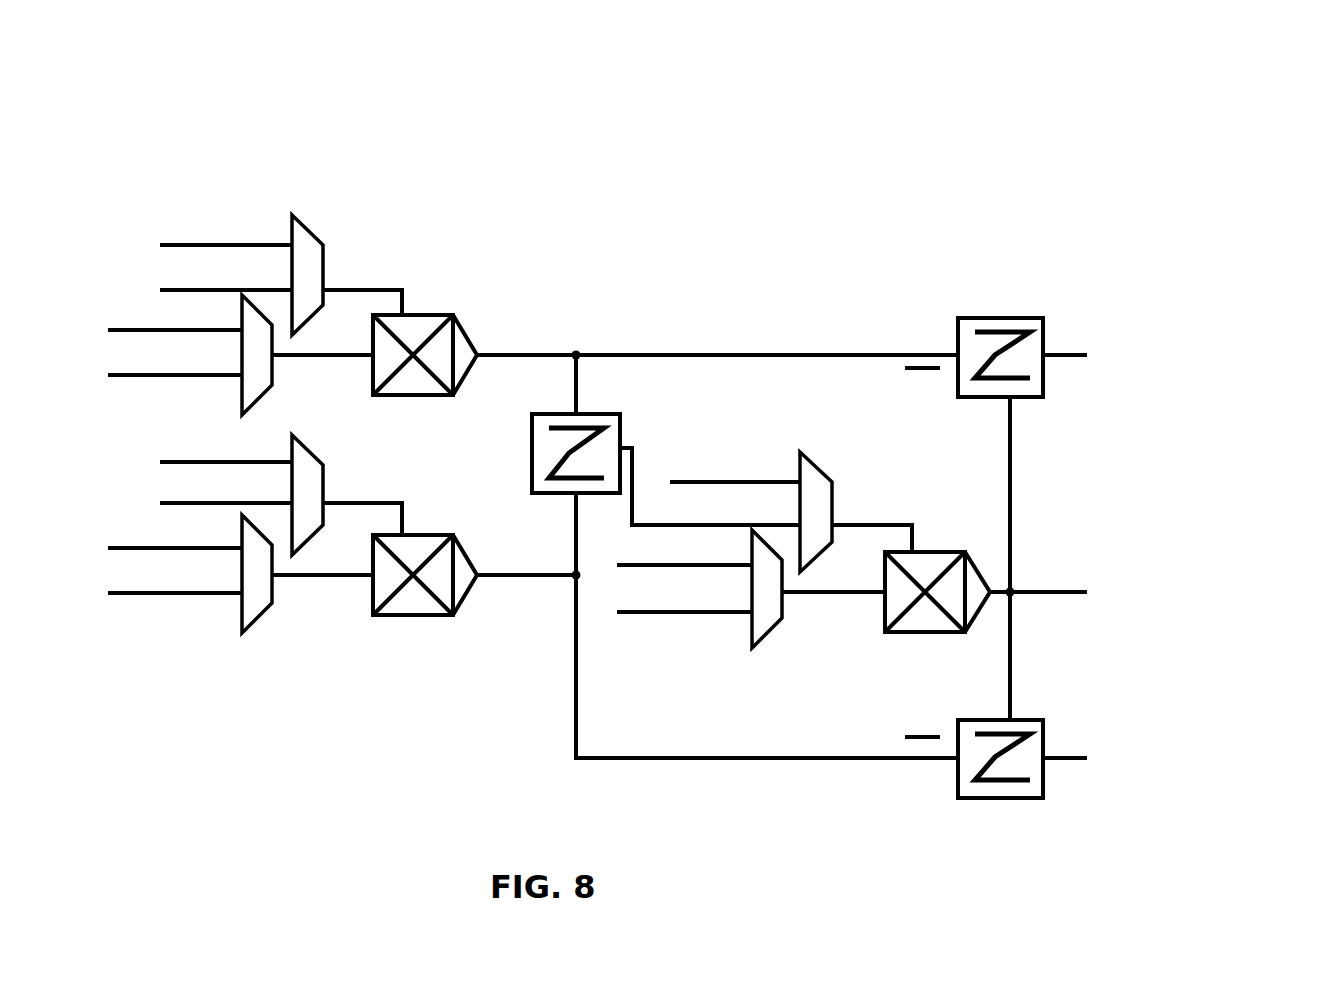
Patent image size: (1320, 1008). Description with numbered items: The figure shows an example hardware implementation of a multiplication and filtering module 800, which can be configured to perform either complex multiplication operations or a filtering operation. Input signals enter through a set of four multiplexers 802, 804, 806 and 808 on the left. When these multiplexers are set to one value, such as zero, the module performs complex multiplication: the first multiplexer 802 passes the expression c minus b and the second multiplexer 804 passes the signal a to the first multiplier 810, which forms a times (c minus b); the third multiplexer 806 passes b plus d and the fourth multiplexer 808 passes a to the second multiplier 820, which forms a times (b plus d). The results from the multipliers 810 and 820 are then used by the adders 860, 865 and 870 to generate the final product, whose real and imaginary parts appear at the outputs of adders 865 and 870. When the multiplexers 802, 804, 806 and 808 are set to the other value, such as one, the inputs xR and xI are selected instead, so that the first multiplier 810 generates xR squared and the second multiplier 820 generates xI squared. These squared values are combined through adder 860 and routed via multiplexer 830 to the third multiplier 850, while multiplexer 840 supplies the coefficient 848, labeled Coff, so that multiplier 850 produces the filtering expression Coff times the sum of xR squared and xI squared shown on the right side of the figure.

The multiplication and filtering module 800 is at (307, 135).
The first multiplexer 802 is at (328, 262).
The second multiplexer 804 is at (262, 410).
The third multiplexer 806 is at (328, 488).
The fourth multiplexer 808 is at (242, 607).
The first multiplier 810 is at (463, 330).
The second multiplier 820 is at (425, 615).
The multiplexer 830 is at (812, 458).
The multiplexer 840 is at (745, 622).
The coefficient 848 is at (672, 618).
The third multiplier 850 is at (895, 635).
The adder 860 is at (532, 460).
The adder 865 is at (990, 318).
The adder 870 is at (960, 795).